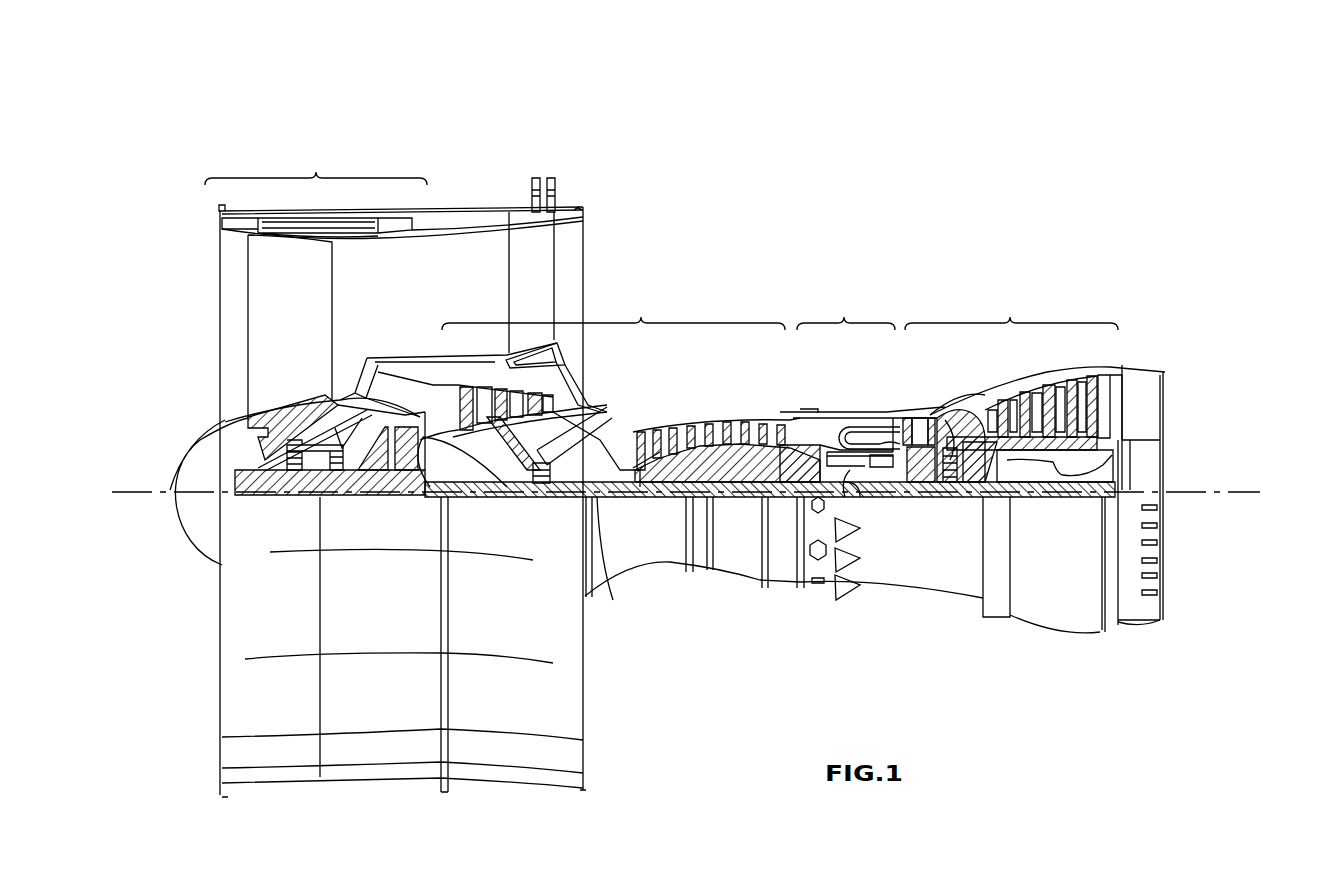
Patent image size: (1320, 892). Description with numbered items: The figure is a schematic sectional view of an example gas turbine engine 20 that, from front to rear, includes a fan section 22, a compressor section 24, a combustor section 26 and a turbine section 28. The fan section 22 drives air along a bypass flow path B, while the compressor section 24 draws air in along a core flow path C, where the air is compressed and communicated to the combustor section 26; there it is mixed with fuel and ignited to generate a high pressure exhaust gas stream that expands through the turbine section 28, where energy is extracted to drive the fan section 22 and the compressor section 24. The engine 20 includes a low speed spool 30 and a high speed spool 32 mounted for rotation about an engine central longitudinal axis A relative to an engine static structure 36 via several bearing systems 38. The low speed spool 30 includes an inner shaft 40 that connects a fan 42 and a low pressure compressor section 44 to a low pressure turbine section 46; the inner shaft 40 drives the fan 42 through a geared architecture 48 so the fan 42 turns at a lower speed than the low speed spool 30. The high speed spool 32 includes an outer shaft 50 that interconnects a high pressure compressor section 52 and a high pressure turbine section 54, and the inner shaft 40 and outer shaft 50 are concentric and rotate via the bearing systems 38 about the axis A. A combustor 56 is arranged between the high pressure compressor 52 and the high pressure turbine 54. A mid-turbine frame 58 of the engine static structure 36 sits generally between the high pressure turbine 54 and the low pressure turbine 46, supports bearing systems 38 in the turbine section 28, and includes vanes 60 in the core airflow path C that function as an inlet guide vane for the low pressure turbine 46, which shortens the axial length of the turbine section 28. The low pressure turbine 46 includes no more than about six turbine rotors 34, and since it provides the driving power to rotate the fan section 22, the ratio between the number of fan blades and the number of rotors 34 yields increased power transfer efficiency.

The gas turbine engine 20 is at (860, 258).
The fan section 22 is at (316, 164).
The compressor section 24 is at (613, 310).
The combustor section 26 is at (846, 310).
The turbine section 28 is at (1011, 310).
The low speed spool 30 is at (740, 500).
The high speed spool 32 is at (779, 445).
The turbine rotors 34 is at (1105, 468).
The engine static structure 36 is at (782, 580).
The bearing systems 38 is at (296, 498).
The inner shaft 40 is at (600, 557).
The fan 42 is at (304, 338).
The low pressure compressor section 44 is at (520, 390).
The low pressure turbine section 46 is at (1042, 382).
The geared architecture 48 is at (406, 498).
The outer shaft 50 is at (862, 480).
The high pressure compressor section 52 is at (745, 420).
The high pressure turbine section 54 is at (919, 418).
The combustor 56 is at (858, 436).
The mid-turbine frame 58 is at (962, 404).
The vanes 60 is at (986, 460).
The engine central longitudinal axis A is at (1252, 492).
The bypass flow path B is at (460, 285).
The core flow path C is at (408, 393).